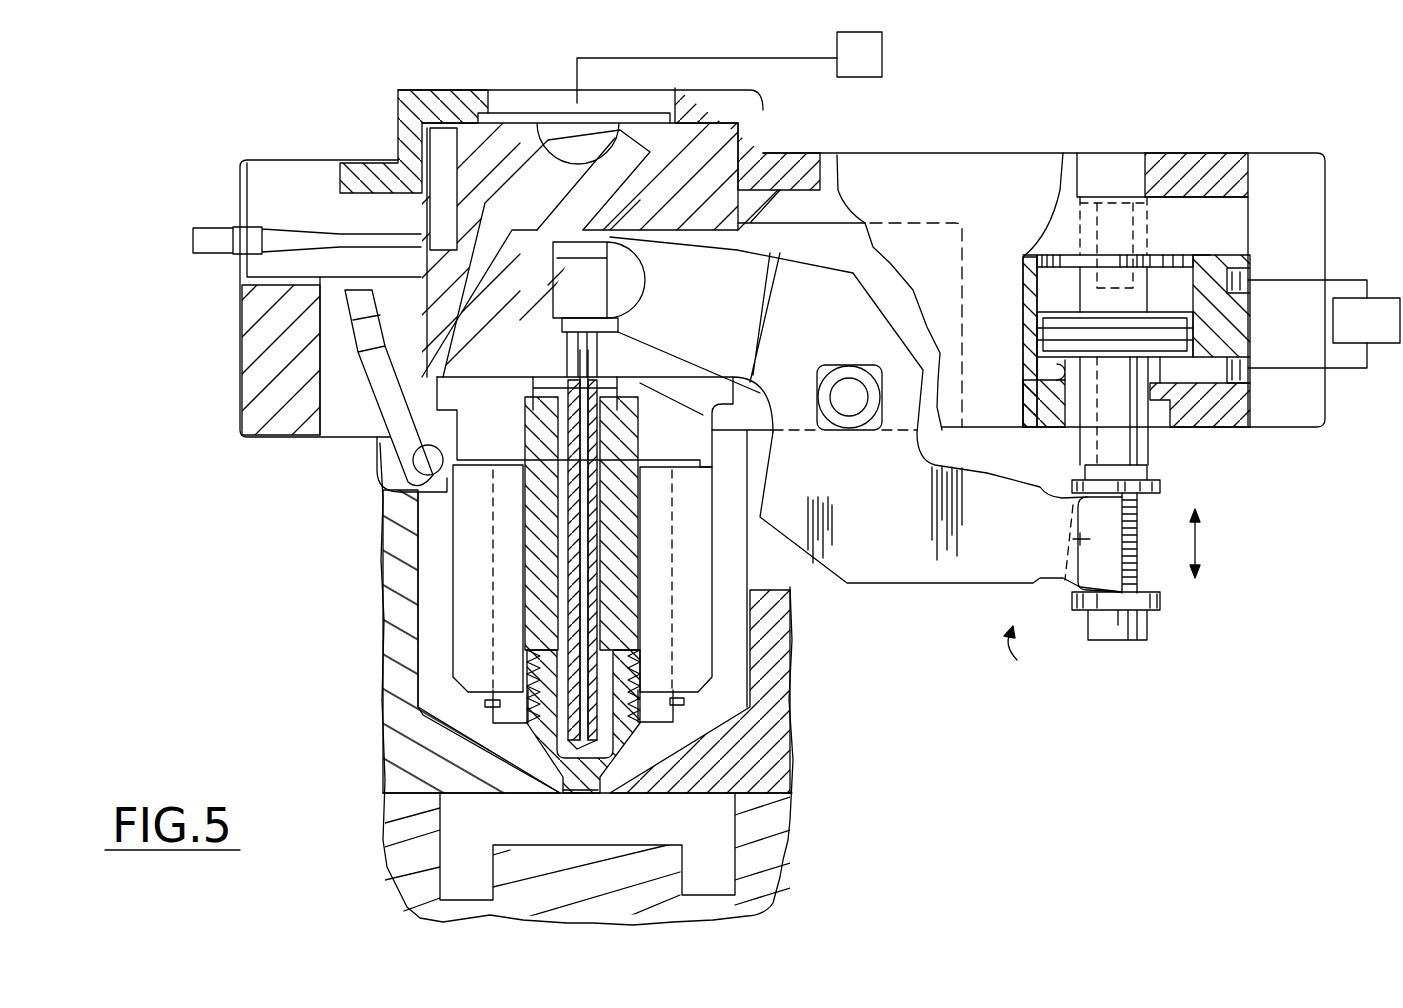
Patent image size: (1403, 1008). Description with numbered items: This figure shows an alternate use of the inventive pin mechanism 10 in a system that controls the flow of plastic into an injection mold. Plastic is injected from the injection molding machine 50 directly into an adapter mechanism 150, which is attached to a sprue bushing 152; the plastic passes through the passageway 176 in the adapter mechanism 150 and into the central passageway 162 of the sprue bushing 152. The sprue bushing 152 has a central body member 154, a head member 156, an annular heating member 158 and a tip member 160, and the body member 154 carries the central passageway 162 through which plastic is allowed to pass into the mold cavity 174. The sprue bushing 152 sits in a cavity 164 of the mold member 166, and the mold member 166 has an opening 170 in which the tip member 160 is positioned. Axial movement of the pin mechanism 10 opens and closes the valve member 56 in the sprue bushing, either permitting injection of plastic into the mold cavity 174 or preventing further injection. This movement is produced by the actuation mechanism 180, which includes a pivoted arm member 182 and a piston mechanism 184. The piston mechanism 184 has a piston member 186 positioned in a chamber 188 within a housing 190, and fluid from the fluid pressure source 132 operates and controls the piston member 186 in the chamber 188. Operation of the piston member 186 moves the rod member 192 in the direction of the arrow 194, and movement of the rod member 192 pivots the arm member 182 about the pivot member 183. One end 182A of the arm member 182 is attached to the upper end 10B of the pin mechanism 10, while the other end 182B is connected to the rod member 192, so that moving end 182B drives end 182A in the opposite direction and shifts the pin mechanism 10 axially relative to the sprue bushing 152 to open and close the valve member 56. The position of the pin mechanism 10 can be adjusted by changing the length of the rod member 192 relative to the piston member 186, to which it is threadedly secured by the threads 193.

The pin mechanism 10 is at (566, 612).
The upper end of the pin mechanism 10B is at (579, 287).
The injection molding machine 50 is at (882, 57).
The valve member 56 is at (577, 796).
The fluid pressure source 132 is at (1378, 298).
The adapter mechanism 150 is at (692, 160).
The sprue bushing 152 is at (716, 650).
The central body member 154 is at (663, 618).
The head member 156 is at (692, 443).
The annular heating member 158 is at (465, 663).
The tip member 160 is at (628, 747).
The central passageway 162 is at (610, 577).
The cavity 164 is at (443, 717).
The mold member 166 is at (383, 528).
The opening 170 is at (600, 795).
The mold cavity 174 is at (493, 840).
The passageway 176 is at (562, 193).
The actuation mechanism 180 is at (1035, 654).
The pivoted arm member 182 is at (933, 573).
The one end of the arm member 182A is at (648, 287).
The other end of the arm member 182B is at (1085, 540).
The pivot member 183 is at (845, 385).
The piston mechanism 184 is at (1200, 178).
The piston member 186 is at (1182, 320).
The chamber 188 is at (1190, 290).
The housing 190 is at (1238, 403).
The rod member 192 is at (1137, 578).
The threads 193 is at (1137, 517).
The arrow 194 is at (1198, 542).